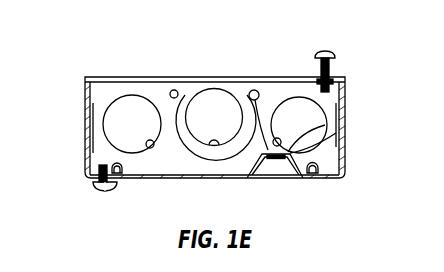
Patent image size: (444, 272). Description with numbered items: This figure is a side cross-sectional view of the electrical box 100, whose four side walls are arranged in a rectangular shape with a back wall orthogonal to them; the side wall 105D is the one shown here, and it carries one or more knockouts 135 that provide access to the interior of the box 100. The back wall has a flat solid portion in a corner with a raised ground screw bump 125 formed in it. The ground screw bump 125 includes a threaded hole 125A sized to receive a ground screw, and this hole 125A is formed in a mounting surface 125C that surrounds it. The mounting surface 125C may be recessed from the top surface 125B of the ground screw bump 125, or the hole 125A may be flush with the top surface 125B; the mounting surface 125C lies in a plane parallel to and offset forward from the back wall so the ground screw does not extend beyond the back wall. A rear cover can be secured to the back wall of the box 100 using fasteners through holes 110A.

The box 100 is at (324, 32).
The side wall 105D is at (157, 92).
The holes 110A is at (97, 170).
The ground screw bump 125 is at (249, 163).
The threaded hole 125A is at (279, 158).
The top surface 125B is at (323, 131).
The mounting surface 125C is at (253, 90).
The knockouts 135 is at (230, 126).